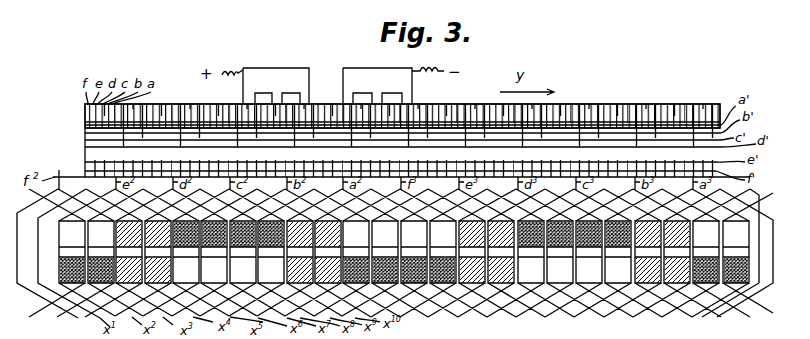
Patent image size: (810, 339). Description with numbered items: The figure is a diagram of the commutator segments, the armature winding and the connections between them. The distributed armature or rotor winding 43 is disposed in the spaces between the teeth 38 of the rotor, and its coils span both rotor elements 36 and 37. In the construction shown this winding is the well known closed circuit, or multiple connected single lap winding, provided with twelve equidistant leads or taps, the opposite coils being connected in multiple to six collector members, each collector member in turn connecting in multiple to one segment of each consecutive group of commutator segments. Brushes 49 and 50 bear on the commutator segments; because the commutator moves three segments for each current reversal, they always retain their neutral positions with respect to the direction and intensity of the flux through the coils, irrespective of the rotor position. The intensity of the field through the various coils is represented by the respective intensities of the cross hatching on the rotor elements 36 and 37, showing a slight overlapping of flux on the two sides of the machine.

The rotor element 36 is at (750, 232).
The rotor element 37 is at (750, 272).
The teeth of the rotor 38 is at (404, 252).
The armature or rotor winding 43 is at (38, 298).
The brush 49 is at (297, 73).
The brush 50 is at (375, 73).